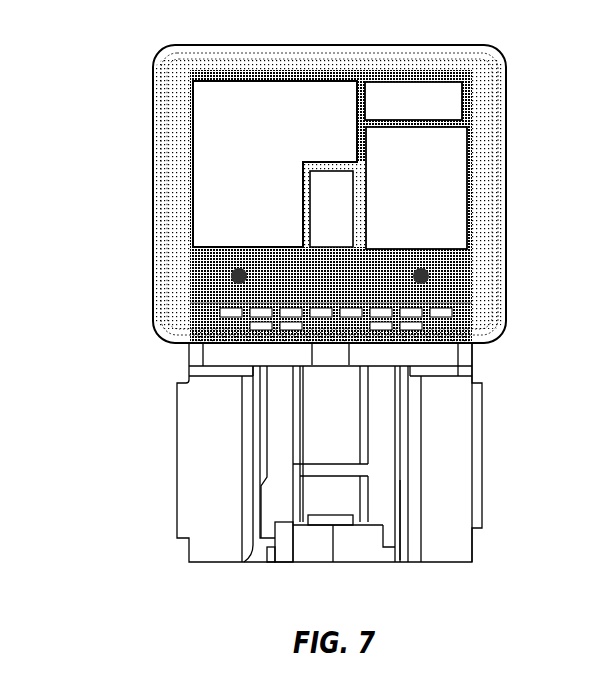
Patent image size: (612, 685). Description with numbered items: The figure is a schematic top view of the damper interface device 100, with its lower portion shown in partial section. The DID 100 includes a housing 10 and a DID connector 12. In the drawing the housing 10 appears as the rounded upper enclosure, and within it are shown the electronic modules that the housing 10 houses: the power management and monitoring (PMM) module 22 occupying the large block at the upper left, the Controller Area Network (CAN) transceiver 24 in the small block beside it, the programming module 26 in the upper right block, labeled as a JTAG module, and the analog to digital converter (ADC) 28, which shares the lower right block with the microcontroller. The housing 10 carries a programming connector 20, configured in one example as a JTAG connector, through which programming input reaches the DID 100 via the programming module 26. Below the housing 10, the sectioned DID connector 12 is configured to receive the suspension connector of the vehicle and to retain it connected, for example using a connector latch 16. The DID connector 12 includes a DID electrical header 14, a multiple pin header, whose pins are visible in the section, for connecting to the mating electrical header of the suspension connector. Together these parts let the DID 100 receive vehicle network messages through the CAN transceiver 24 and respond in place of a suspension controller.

The damper interface device 100 is at (60, 155).
The DID housing 10 is at (120, 251).
The DID connector 12 is at (154, 463).
The DID electrical header 14 is at (437, 354).
The connector latch 16 is at (400, 482).
The programming connector 20 is at (410, 38).
The power management and monitoring (PMM) module 22 is at (275, 81).
The Controller Area Network (CAN) transceiver 24 is at (303, 188).
The programming module 26 is at (450, 82).
The analog to digital converter (ADC) 28 is at (470, 187).